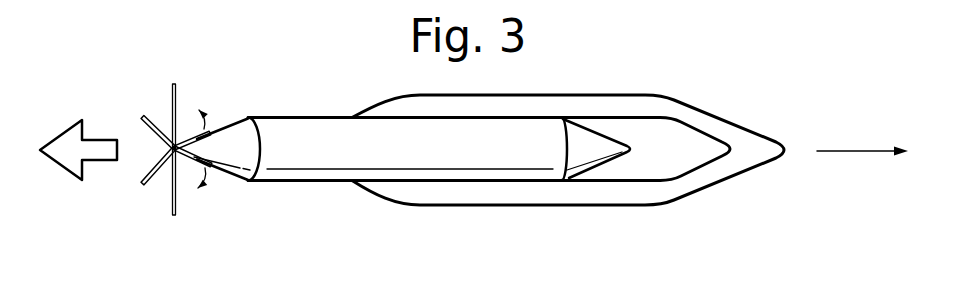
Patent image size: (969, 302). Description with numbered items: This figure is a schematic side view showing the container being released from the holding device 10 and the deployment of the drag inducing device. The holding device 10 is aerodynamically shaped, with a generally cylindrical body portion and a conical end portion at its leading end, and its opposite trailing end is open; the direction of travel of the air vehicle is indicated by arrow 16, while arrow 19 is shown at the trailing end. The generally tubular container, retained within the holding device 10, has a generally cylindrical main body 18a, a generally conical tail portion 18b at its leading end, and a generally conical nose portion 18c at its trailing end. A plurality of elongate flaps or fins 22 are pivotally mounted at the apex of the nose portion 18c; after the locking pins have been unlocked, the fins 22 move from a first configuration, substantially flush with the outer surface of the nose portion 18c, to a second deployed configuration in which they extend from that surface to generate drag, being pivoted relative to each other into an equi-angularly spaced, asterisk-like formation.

The holding device 10 is at (690, 98).
The arrow indicating direction of travel 16 is at (867, 152).
The main body 18a is at (328, 155).
The tail portion 18b is at (593, 152).
The nose portion 18c is at (237, 130).
The flow direction arrow 19 is at (64, 161).
The flaps or fins 22 is at (173, 216).